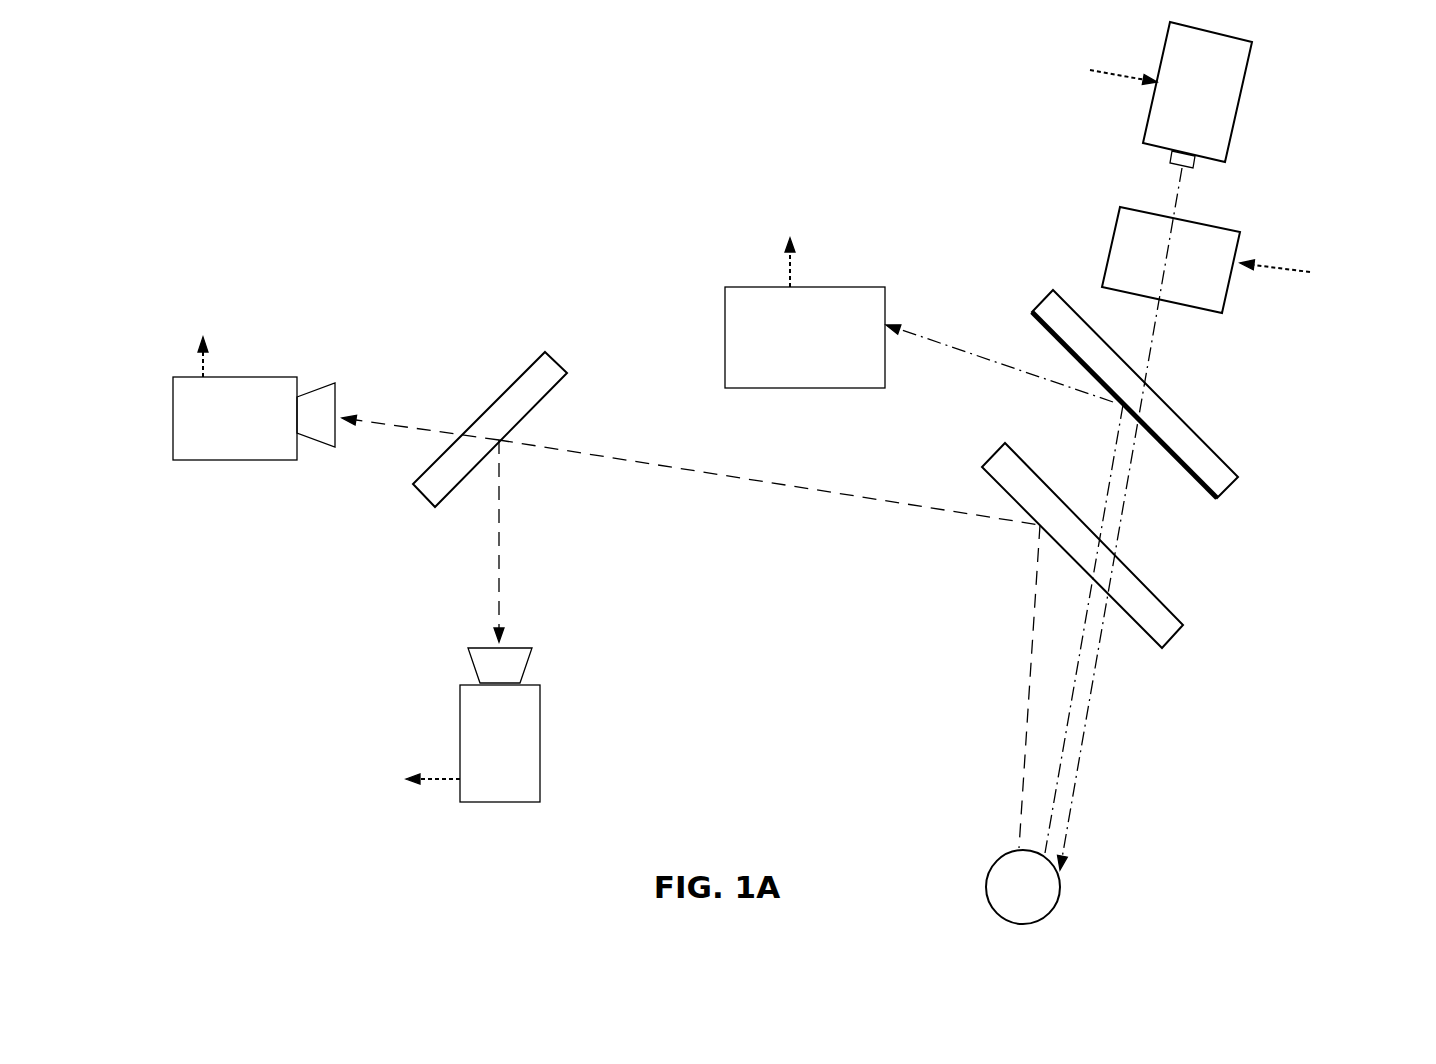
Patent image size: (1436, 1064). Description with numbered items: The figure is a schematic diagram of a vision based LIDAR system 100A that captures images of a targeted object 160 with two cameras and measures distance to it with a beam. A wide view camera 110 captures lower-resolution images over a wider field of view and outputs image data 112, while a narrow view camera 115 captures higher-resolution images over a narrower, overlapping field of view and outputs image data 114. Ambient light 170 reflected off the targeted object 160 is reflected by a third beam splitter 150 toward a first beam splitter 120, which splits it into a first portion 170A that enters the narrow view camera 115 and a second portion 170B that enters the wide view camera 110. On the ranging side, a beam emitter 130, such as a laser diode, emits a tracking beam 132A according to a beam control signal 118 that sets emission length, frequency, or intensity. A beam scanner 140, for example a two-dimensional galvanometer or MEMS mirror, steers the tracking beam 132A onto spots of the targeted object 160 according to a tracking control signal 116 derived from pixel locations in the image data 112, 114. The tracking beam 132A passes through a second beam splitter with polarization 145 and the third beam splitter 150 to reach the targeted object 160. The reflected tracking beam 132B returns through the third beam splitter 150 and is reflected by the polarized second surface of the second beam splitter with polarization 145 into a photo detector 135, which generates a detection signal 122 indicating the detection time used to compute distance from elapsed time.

The vision based LIDAR system 100A is at (213, 90).
The wide view camera 110 is at (277, 460).
The image data 112 is at (203, 345).
The image data 114 is at (410, 773).
The narrow view camera 115 is at (541, 722).
The tracking control signal 116 is at (1312, 272).
The beam control signal 118 is at (1107, 72).
The first beam splitter 120 is at (548, 352).
The detection signal 122 is at (787, 250).
The beam emitter 130 is at (1240, 110).
The tracking beam 132A is at (1090, 697).
The reflected tracking beam 132B is at (1077, 670).
The photo detector 135 is at (805, 337).
The beam scanner 140 is at (1117, 228).
The second beam splitter with polarization 145 is at (1213, 445).
The third beam splitter 150 is at (1165, 610).
The targeted object 160 is at (1053, 913).
The light 170 is at (818, 492).
The first portion 170A is at (503, 525).
The second portion 170B is at (421, 428).